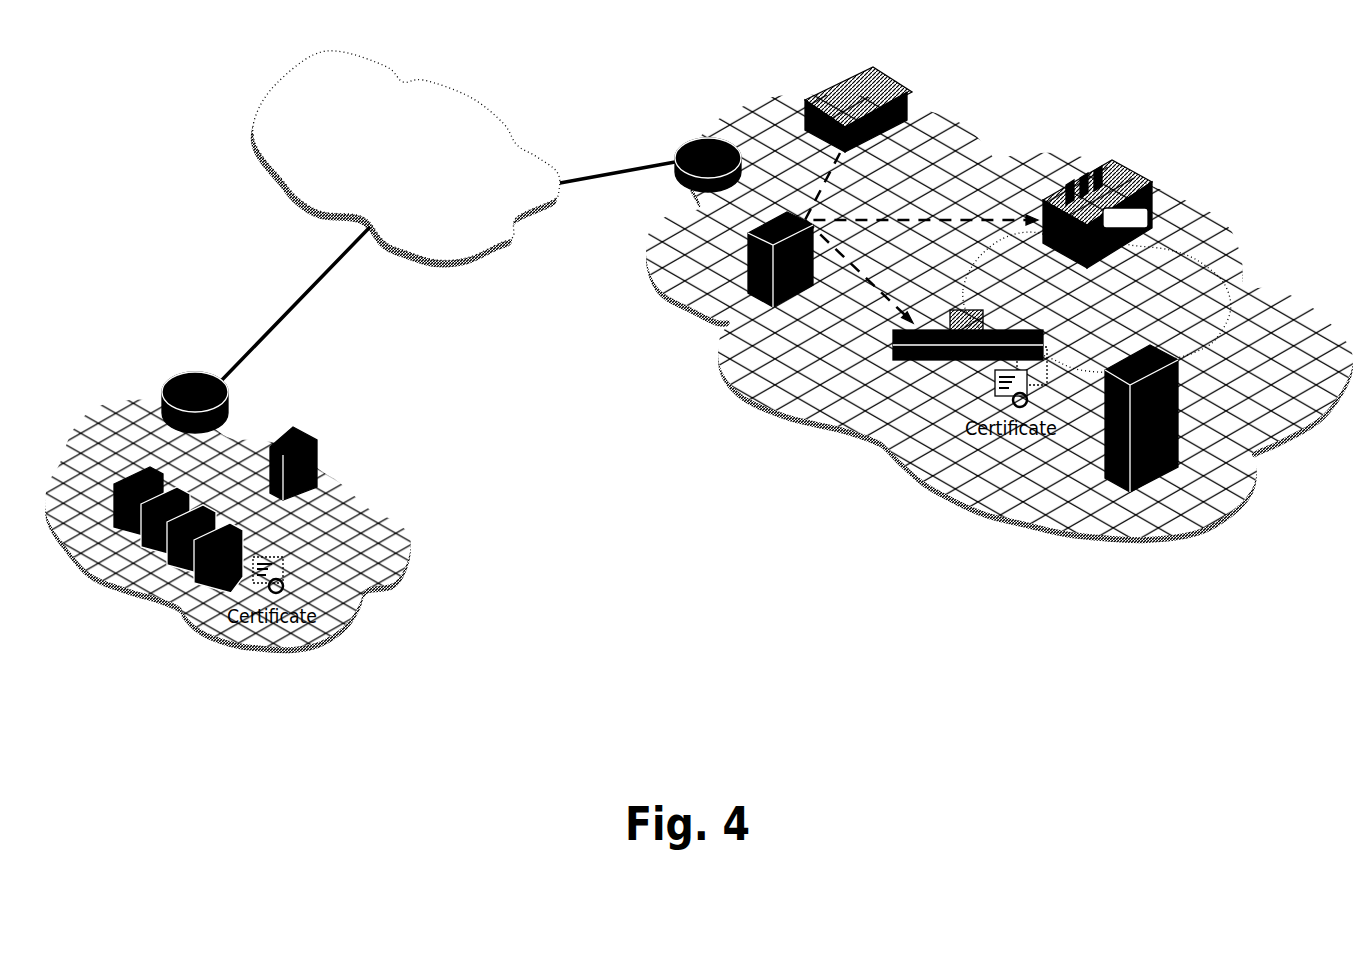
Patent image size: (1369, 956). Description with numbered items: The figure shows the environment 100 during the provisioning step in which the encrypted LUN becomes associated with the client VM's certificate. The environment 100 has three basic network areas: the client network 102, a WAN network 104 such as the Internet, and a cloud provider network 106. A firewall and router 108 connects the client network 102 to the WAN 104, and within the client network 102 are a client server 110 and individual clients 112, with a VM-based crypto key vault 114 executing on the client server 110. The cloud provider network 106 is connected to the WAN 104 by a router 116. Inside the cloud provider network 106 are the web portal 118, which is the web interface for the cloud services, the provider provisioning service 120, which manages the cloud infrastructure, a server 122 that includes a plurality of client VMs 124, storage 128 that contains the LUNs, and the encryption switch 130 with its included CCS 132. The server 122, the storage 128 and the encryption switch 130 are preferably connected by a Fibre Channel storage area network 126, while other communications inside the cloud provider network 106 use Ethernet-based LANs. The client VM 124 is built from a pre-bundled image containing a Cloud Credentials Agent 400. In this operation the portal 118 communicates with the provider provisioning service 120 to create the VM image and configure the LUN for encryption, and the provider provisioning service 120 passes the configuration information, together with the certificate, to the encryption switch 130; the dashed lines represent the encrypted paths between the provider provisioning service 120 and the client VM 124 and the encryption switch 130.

The environment 100 is at (740, 665).
The client network 102 is at (300, 645).
The WAN network 104 is at (272, 103).
The cloud provider network 106 is at (1157, 540).
The firewall and router 108 is at (187, 375).
The client server 110 is at (318, 478).
The individual clients 112 is at (167, 570).
The VM-based crypto key vault 114 is at (287, 428).
The router 116 is at (700, 136).
The web portal 118 is at (818, 96).
The provider provisioning service 120 is at (750, 250).
The server 122 is at (1121, 199).
The client VMs 124 is at (1097, 170).
The Fibre Channel storage area network 126 is at (968, 280).
The storage 128 is at (1180, 415).
The encryption switch 130 is at (962, 362).
The CCS 132 is at (962, 310).
The Cloud Credentials Agent 400 is at (1120, 250).